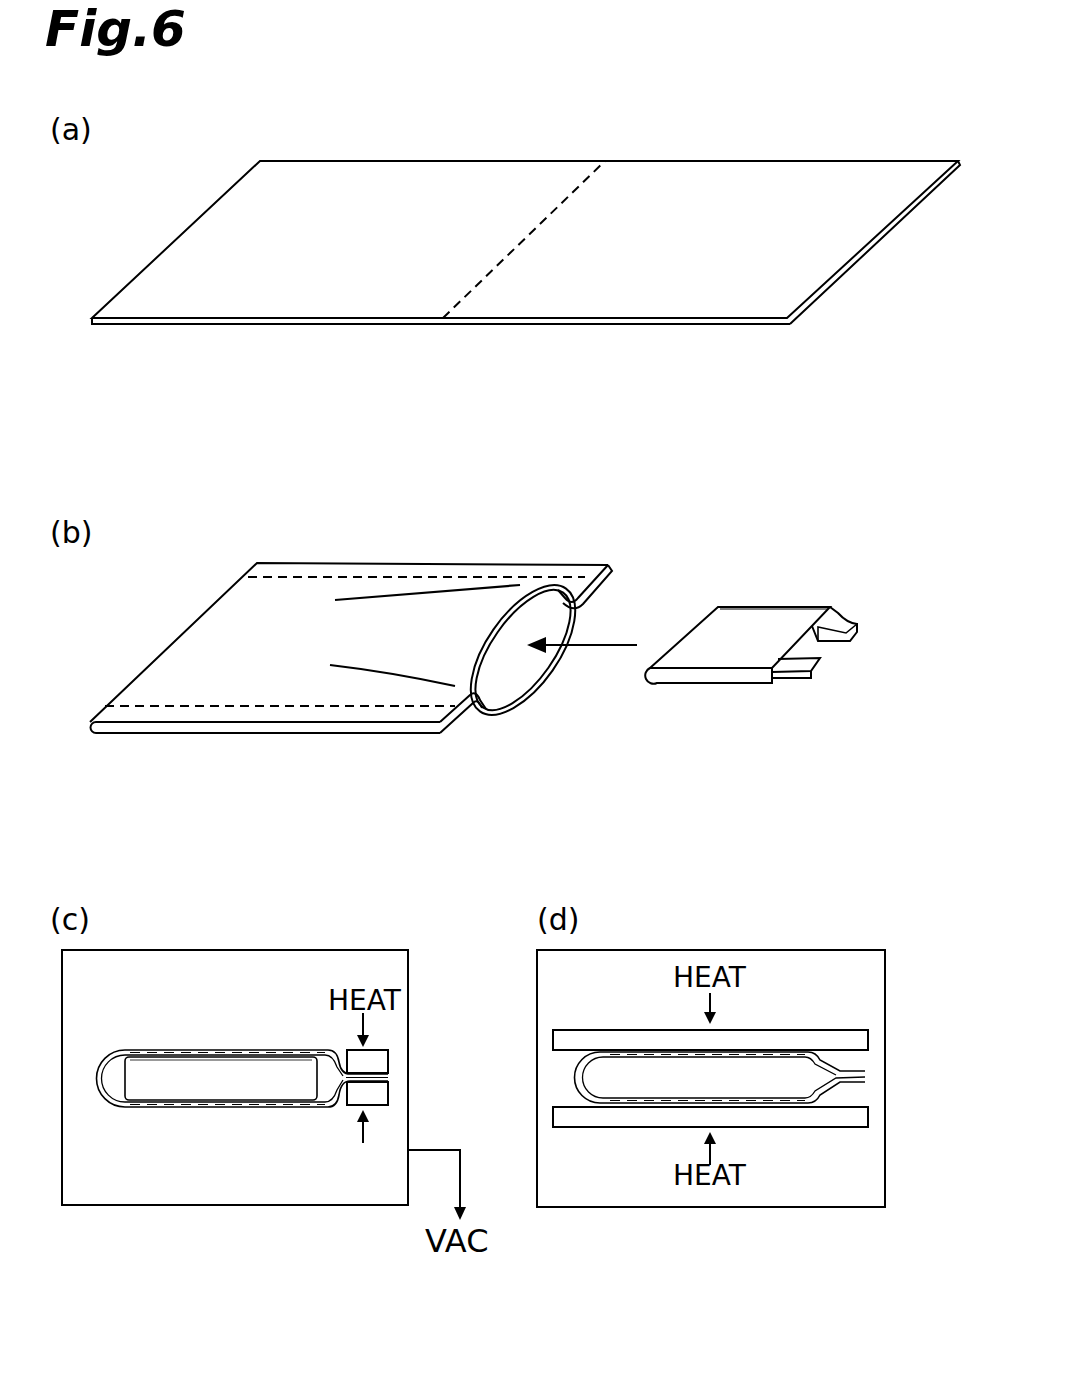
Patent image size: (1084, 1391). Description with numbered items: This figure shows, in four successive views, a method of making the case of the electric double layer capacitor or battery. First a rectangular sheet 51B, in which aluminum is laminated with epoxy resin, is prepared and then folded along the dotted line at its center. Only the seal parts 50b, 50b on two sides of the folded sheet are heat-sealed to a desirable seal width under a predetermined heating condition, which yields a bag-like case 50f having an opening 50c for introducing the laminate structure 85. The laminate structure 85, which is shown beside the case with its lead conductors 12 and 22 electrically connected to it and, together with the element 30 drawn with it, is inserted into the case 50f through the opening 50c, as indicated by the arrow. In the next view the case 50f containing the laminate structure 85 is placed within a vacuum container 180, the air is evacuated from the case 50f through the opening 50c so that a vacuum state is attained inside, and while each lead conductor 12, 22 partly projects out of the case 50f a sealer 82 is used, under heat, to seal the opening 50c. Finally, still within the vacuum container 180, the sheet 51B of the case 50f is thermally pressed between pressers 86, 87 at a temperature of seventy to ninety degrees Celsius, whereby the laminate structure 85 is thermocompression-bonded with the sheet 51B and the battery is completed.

The rectangular sheet 51B is at (403, 215).
The bag-like case 50f is at (221, 550).
The seal parts 50b is at (335, 572).
The opening 50c is at (565, 600).
The electrode plate 30 is at (710, 675).
The laminate structure 85 is at (753, 620).
The lead conductor 12 is at (828, 607).
The lead conductor 22 is at (792, 683).
The vacuum container 180 is at (255, 950).
The sealer 82 is at (380, 1044).
The presser 86 is at (863, 1033).
The presser 87 is at (863, 1113).